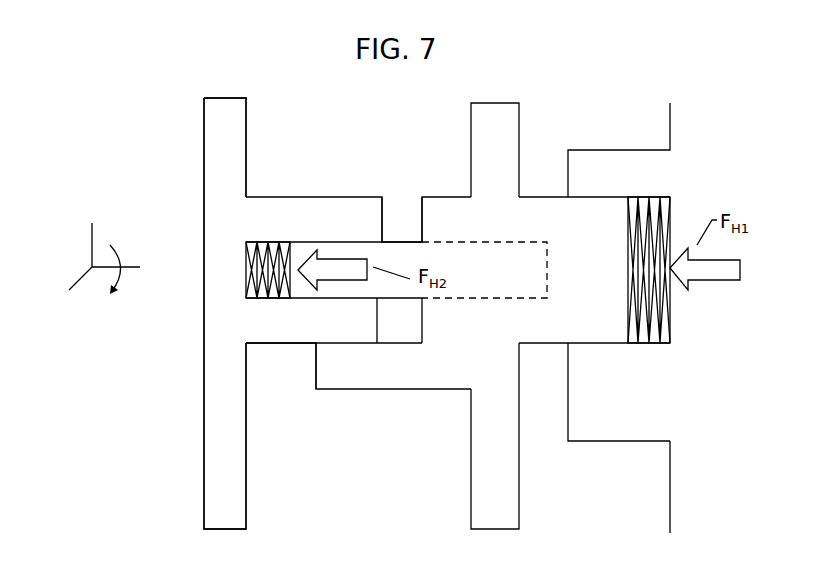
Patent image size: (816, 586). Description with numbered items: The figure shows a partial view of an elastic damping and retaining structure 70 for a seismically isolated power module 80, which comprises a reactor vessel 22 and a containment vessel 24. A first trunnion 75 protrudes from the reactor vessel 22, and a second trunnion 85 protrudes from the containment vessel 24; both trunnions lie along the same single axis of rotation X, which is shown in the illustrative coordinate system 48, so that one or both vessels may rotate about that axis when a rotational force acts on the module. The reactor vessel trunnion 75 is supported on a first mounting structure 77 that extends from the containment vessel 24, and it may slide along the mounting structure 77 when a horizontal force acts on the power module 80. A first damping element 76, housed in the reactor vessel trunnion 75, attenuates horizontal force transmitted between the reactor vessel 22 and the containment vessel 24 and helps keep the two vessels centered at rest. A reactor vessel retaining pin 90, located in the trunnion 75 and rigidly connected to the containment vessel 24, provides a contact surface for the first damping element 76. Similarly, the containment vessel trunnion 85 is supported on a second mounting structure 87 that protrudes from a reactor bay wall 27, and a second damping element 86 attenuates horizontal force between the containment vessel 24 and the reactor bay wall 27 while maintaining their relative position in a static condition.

The seismically isolated power module 80 is at (148, 95).
The elastic damping and retaining structure 70 is at (371, 126).
The illustrative coordinate system 48 is at (135, 205).
The reactor vessel 22 is at (195, 485).
The containment vessel 24 is at (523, 130).
The reactor bay wall 27 is at (653, 497).
The first trunnion 75 is at (267, 352).
The first damping element 76 is at (263, 235).
The first mounting structure 77 is at (387, 405).
The second trunnion 85 is at (545, 351).
The second damping element 86 is at (648, 192).
The second mounting structure 87 is at (607, 450).
The reactor vessel retaining pin 90 is at (400, 228).